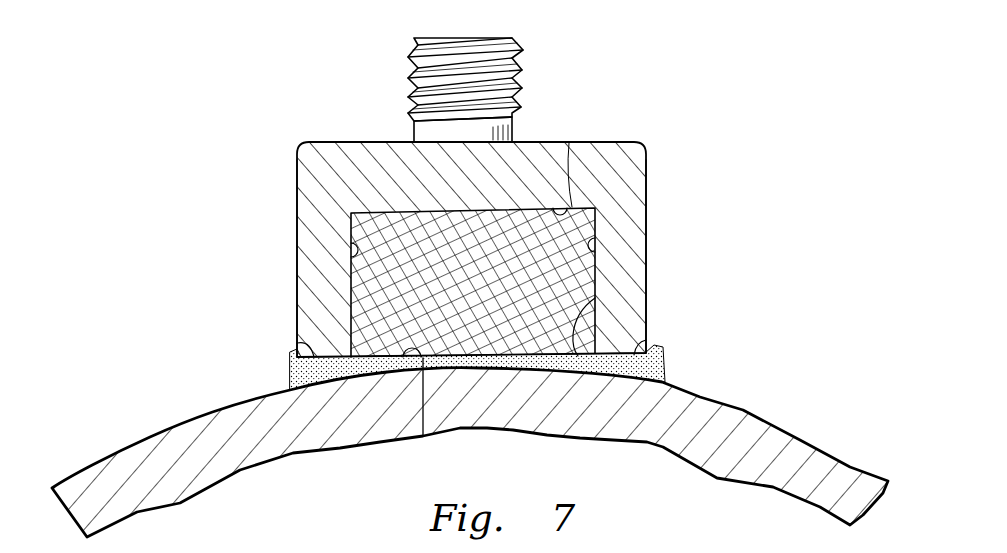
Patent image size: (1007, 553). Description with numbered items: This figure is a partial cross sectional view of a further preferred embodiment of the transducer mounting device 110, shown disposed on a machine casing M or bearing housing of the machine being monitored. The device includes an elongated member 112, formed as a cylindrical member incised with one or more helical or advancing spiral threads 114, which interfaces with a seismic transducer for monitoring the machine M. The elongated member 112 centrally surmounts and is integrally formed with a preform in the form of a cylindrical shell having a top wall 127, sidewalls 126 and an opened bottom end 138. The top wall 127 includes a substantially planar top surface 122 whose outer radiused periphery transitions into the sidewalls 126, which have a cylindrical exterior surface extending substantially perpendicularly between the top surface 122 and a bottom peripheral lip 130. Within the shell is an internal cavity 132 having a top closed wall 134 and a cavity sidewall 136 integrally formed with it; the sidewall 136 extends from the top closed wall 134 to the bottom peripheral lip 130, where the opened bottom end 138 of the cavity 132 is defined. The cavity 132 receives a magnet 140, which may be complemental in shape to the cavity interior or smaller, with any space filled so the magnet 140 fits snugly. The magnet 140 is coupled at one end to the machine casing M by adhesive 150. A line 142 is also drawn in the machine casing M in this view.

The transducer mounting device 110 is at (702, 95).
The elongated member 112 is at (514, 127).
The threads 114 is at (517, 52).
The top surface 122 is at (325, 143).
The sidewalls 126 is at (308, 215).
The top wall 127 is at (400, 142).
The bottom peripheral lip 130 is at (297, 342).
The internal cavity 132 is at (370, 208).
The top closed wall 134 is at (569, 143).
The cavity sidewall 136 is at (351, 262).
The opened bottom end 138 is at (596, 298).
The magnet 140 is at (470, 281).
The seam 142 is at (423, 436).
The adhesive 150 is at (291, 372).
The machine casing M is at (808, 447).